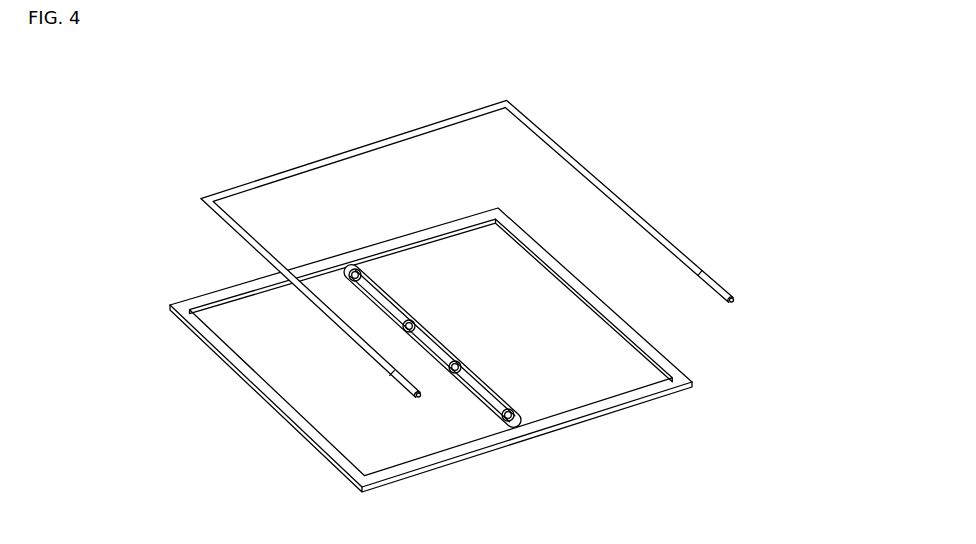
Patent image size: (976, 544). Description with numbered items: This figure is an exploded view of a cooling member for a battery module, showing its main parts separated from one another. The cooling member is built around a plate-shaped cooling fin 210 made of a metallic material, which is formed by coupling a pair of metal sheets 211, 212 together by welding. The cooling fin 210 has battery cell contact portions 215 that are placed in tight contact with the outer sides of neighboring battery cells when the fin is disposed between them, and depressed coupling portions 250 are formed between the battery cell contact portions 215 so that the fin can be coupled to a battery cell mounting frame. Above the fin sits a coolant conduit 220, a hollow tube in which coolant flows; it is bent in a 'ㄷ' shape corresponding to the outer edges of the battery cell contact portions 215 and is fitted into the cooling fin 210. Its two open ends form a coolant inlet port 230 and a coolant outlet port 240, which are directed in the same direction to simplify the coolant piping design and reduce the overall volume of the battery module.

The cooling fin 210 is at (379, 366).
The metal sheet 211 is at (202, 340).
The metal sheet 212 is at (272, 392).
The battery cell contact portion 215 is at (433, 438).
The coolant conduit 220 is at (233, 243).
The coolant inlet port 230 is at (418, 398).
The coolant outlet port 240 is at (733, 302).
The depressed coupling portion 250 is at (355, 265).